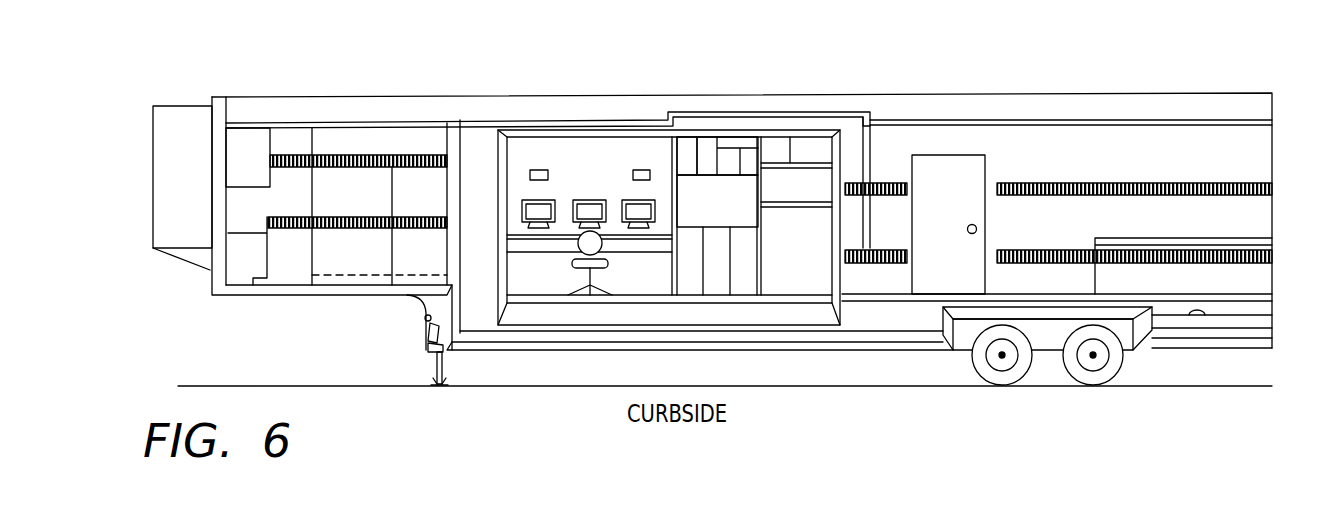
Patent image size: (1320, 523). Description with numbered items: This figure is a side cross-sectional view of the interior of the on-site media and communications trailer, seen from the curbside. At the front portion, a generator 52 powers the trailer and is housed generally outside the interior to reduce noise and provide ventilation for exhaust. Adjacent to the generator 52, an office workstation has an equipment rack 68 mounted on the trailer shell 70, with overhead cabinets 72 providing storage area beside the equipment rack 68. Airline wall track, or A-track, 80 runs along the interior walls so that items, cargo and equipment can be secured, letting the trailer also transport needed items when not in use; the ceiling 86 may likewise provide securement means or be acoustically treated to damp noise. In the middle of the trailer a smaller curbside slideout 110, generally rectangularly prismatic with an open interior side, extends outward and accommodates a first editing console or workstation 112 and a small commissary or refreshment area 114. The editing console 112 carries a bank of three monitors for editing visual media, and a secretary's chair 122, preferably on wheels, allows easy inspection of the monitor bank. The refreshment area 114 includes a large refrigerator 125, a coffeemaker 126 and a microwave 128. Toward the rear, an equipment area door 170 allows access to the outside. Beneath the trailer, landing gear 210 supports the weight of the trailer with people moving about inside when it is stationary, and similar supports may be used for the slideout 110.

The generator 52 is at (167, 160).
The equipment rack 68 is at (238, 174).
The trailer shell 70 is at (1228, 92).
The overhead cabinets 72 is at (233, 271).
The airline wall track 80 is at (334, 153).
The ceiling 86 is at (1014, 124).
The curbside slideout 110 is at (760, 122).
The first editing console 112 is at (572, 171).
The refreshment area 114 is at (689, 217).
The secretary's chair 122 is at (602, 277).
The refrigerator 125 is at (772, 197).
The coffeemaker 126 is at (732, 163).
The microwave 128 is at (687, 157).
The equipment area door 170 is at (927, 197).
The landing gear 210 is at (428, 362).